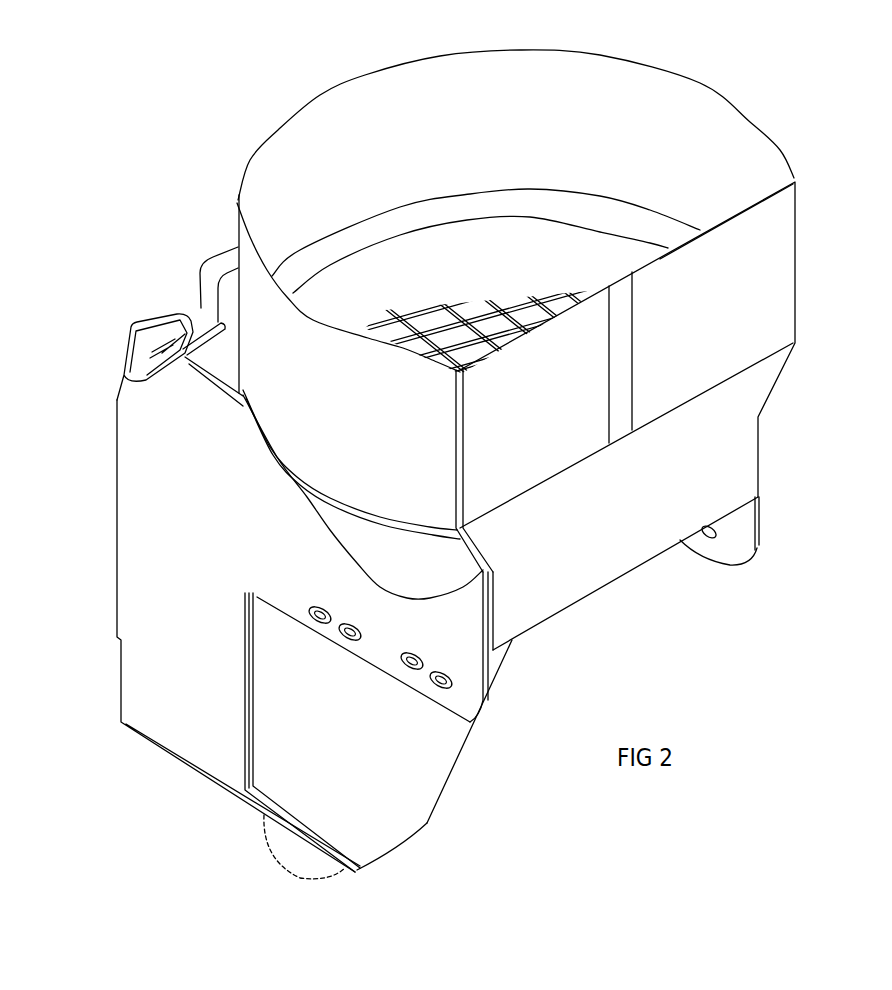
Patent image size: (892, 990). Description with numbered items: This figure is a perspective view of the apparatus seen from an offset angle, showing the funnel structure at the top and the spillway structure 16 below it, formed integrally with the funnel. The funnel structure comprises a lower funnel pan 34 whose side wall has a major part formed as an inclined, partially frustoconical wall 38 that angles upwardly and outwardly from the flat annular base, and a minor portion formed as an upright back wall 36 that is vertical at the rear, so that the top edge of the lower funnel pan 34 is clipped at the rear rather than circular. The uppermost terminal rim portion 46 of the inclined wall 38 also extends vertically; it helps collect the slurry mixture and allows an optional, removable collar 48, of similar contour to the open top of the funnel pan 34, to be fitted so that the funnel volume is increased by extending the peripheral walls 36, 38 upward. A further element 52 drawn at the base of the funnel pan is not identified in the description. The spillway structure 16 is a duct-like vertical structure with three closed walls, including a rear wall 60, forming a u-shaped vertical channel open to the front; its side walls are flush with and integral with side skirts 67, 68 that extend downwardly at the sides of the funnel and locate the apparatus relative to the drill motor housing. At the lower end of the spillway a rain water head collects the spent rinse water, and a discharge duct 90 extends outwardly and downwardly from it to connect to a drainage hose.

The spillway structure 16 is at (157, 436).
The lower funnel pan 34 is at (377, 280).
The upright back wall 36 is at (702, 485).
The inclined partially frustoconical wall 38 is at (522, 266).
The uppermost terminal rim portion 46 is at (495, 225).
The removable collar 48 is at (668, 120).
The mesh screen 52 is at (428, 303).
The rear wall 60 is at (406, 805).
The side skirt 67 is at (470, 677).
The side skirt 68 is at (743, 538).
The discharge duct 90 is at (305, 866).